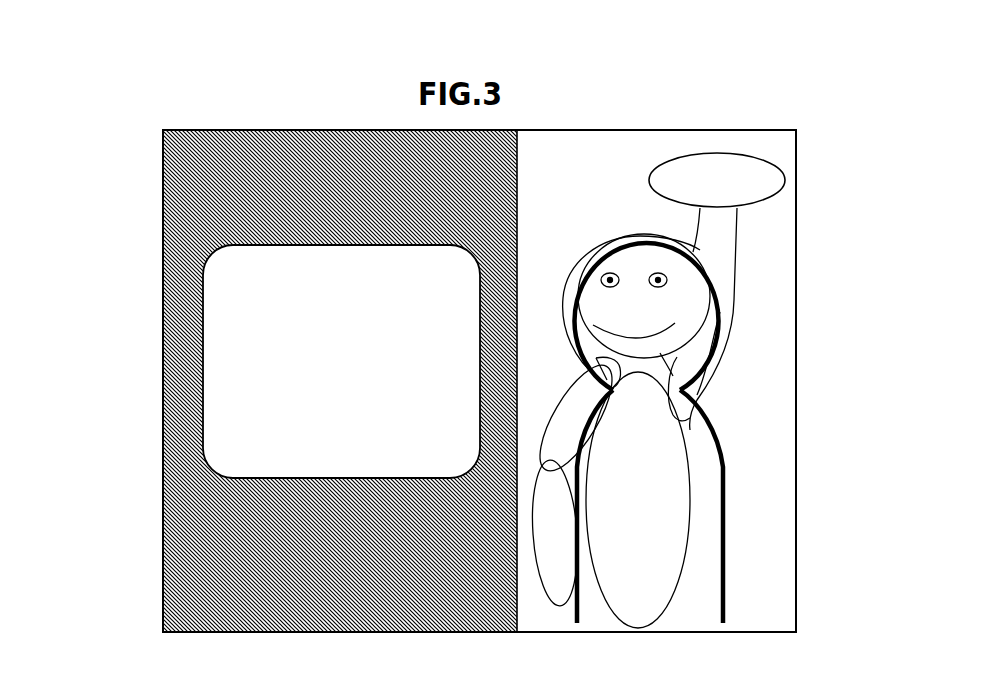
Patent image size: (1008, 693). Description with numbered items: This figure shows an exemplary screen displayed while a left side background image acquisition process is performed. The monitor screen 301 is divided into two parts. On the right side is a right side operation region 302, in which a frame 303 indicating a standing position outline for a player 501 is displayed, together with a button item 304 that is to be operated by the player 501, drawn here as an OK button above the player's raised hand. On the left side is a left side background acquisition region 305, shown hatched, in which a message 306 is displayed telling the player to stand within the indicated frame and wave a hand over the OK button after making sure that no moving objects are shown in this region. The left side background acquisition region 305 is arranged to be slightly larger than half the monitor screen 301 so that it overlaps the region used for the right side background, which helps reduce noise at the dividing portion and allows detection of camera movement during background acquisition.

The monitor screen 301 is at (136, 193).
The right side operation region 302 is at (766, 556).
The frame 303 is at (723, 452).
The button item 304 is at (763, 161).
The left side background acquisition region 305 is at (172, 533).
The message 306 is at (200, 352).
The player 501 is at (635, 605).